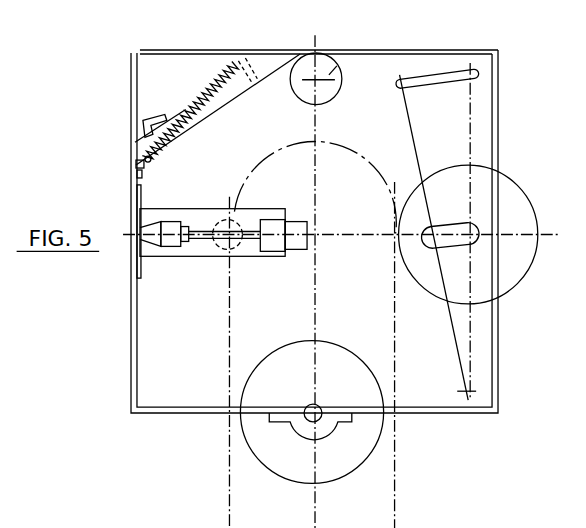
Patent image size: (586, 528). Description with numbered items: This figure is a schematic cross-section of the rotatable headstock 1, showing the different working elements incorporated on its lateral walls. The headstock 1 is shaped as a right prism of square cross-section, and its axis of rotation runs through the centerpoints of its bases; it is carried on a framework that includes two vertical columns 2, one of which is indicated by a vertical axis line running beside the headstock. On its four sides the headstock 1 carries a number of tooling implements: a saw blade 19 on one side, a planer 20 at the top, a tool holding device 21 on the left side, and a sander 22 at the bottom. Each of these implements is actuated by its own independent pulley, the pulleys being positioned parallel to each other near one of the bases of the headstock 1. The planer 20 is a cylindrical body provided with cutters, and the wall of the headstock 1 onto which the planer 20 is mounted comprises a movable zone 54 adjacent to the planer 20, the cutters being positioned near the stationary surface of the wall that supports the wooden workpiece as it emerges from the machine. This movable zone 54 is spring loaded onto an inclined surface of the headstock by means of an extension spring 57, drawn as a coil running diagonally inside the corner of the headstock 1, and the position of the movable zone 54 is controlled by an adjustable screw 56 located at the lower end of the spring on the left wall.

The headstock 1 is at (390, 43).
The vertical columns 2 is at (380, 502).
The saw blade 19 is at (513, 213).
The planer 20 is at (328, 68).
The tool holding device 21 is at (210, 232).
The sander 22 is at (262, 438).
The movable zone 54 is at (175, 45).
The adjustable screw 56 is at (133, 160).
The extension spring 57 is at (197, 95).